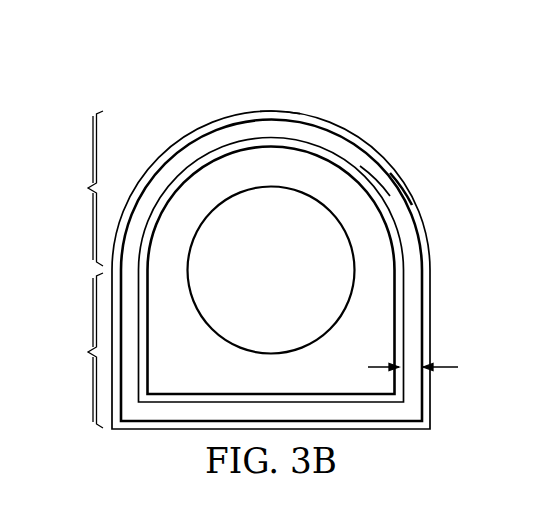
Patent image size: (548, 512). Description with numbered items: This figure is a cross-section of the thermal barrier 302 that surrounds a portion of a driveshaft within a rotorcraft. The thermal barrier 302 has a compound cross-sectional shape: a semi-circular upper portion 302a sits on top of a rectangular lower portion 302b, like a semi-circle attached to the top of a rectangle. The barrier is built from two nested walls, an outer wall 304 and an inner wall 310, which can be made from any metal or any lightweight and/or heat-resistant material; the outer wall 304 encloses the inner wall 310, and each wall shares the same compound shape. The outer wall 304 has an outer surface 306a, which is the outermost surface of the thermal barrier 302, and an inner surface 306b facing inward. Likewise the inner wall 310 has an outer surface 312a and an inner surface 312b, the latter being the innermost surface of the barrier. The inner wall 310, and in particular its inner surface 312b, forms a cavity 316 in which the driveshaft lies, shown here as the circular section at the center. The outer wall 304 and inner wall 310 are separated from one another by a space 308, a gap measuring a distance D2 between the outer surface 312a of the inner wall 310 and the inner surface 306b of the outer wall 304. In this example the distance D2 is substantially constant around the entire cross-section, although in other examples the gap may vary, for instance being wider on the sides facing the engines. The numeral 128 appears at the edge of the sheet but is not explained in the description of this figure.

The thermal barrier 302 is at (163, 85).
The upper portion 302a is at (68, 188).
The lower portion 302b is at (67, 350).
The outer wall 304 is at (240, 100).
The outer surface 306a is at (290, 112).
The inner surface 306b is at (340, 138).
The space 308 is at (383, 185).
The inner wall 310 is at (407, 204).
The outer surface 312a is at (403, 241).
The inner surface 312b is at (396, 262).
The cavity 316 is at (378, 329).
The distance D2 is at (426, 371).
The adjacent element 128 is at (547, 430).